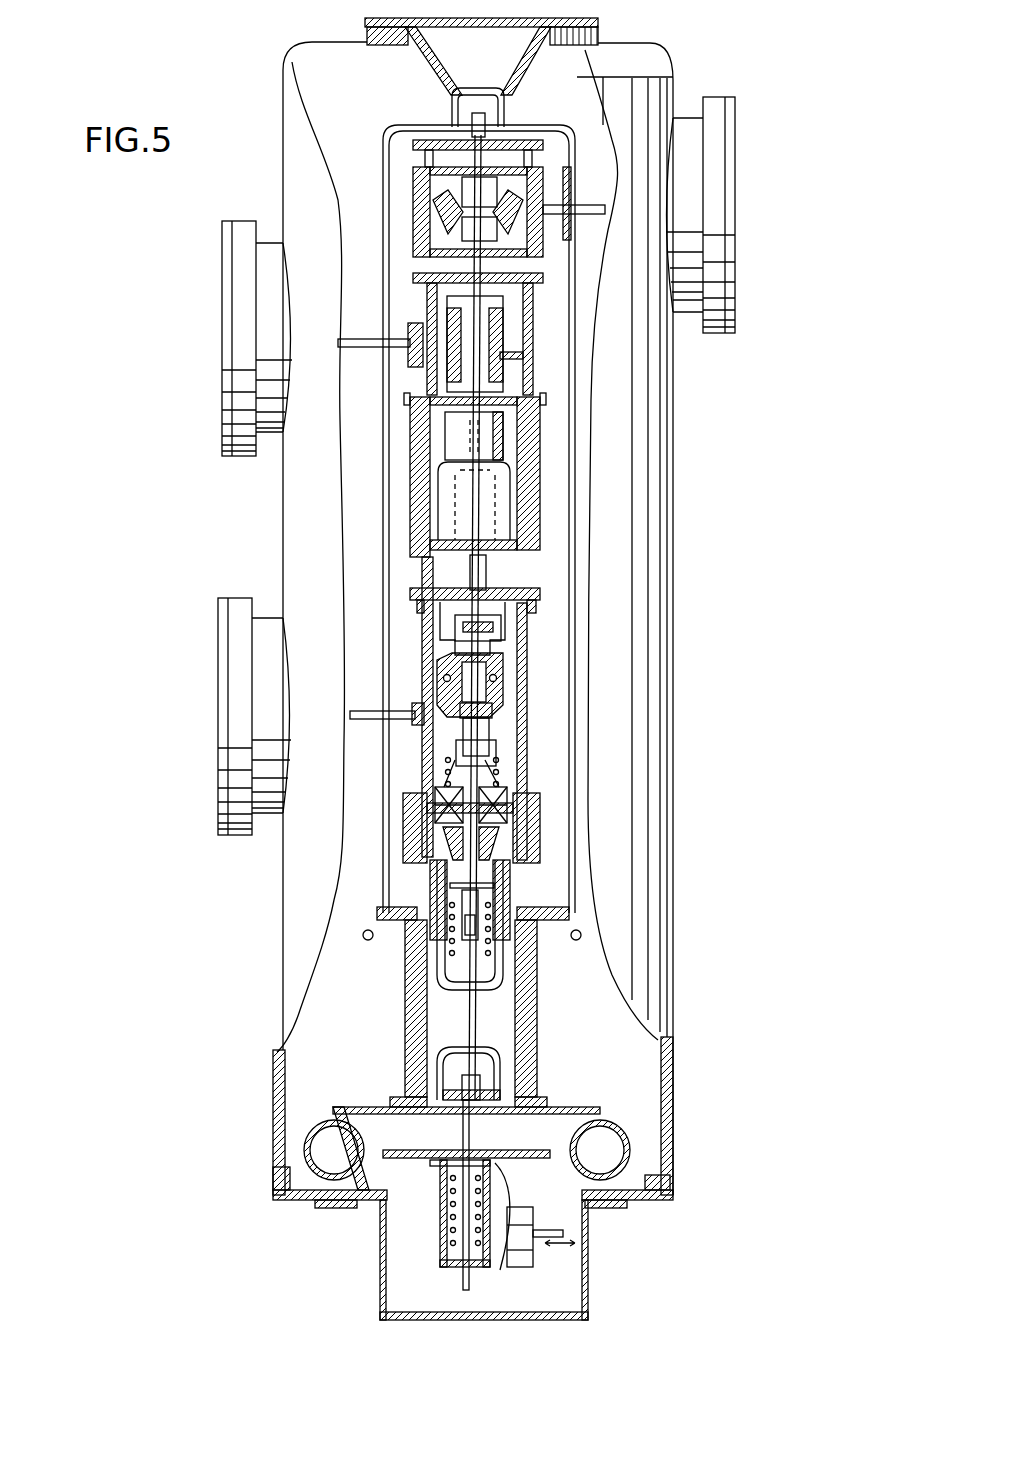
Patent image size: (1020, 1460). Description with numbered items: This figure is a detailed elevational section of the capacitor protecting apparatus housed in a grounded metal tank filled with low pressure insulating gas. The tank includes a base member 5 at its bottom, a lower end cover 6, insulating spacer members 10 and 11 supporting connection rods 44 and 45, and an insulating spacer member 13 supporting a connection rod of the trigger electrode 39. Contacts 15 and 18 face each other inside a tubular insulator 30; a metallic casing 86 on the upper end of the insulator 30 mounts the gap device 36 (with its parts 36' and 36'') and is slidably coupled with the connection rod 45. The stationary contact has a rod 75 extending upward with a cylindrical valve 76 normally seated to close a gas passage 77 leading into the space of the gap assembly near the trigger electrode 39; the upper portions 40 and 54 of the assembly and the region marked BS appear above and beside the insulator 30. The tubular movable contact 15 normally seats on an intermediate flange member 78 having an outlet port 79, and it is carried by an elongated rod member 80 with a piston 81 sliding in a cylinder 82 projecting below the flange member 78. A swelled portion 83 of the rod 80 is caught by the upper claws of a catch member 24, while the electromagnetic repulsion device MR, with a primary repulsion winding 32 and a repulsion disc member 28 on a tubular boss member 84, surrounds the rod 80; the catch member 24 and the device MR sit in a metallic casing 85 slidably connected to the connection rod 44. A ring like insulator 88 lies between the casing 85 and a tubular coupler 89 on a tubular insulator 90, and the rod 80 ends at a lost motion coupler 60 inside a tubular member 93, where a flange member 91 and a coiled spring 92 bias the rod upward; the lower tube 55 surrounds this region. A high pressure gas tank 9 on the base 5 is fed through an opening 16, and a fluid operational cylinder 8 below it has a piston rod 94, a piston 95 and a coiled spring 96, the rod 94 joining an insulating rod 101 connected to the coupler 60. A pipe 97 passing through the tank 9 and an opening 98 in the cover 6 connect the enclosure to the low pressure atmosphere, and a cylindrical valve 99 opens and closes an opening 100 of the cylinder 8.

The base member 5 is at (636, 1210).
The lower end cover 6 is at (497, 1318).
The fluid operational cylinder 8 is at (441, 1250).
The high pressure gas tank 9 is at (592, 1115).
The insulating spacer member 10 is at (218, 608).
The insulating spacer member 11 is at (224, 298).
The insulating spacer member 13 is at (736, 165).
The movable contact 15 is at (520, 495).
The opening 16 is at (310, 1202).
The contact 18 is at (548, 432).
The catch member 24 is at (498, 712).
The repulsion disc member 28 is at (507, 797).
The tubular insulator 30 is at (545, 470).
The primary repulsion winding 32 is at (510, 825).
The gap device 36 is at (430, 198).
The left cone 36' is at (407, 190).
The right cone 36'' is at (437, 212).
The trigger electrode 39 is at (545, 192).
The inner housing 40 is at (380, 478).
The connection rod 44 is at (358, 712).
The connection rod 45 is at (342, 345).
The top cap 54 is at (480, 92).
The left tube 55 is at (510, 992).
The lost motion coupler 60 is at (445, 906).
The rod 75 is at (515, 363).
The cylindrical valve 76 is at (448, 322).
The gas passage 77 is at (515, 325).
The intermediate flange member 78 is at (422, 568).
The outlet port 79 is at (530, 568).
The elongated rod member 80 is at (486, 573).
The piston 81 is at (458, 625).
The cylinder 82 is at (505, 632).
The swelled portion 83 is at (470, 675).
The tubular boss member 84 is at (483, 730).
The metallic casing 85 is at (527, 692).
The metallic casing 86 is at (425, 298).
The ring like insulator 88 is at (405, 830).
The tubular coupler 89 is at (410, 870).
The tubular insulator 90 is at (530, 1023).
The flange member 91 is at (494, 886).
The coiled spring 92 is at (478, 920).
The tubular member 93 is at (430, 932).
The piston rod 94 is at (462, 1278).
The piston 95 is at (452, 1176).
The coiled spring 96 is at (445, 1222).
The pipe 97 is at (343, 1128).
The opening 98 is at (364, 1208).
The cylindrical valve 99 is at (518, 1218).
The opening 100 is at (505, 1245).
The insulating rod 101 is at (465, 995).
The brush side BS is at (548, 490).
The electromagnetic repulsion device MR is at (548, 818).